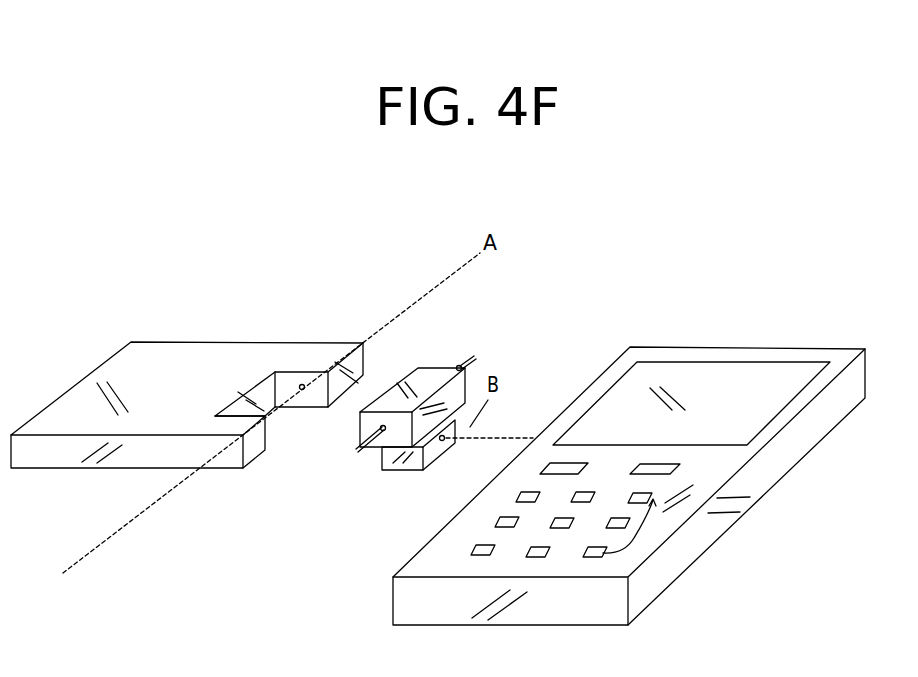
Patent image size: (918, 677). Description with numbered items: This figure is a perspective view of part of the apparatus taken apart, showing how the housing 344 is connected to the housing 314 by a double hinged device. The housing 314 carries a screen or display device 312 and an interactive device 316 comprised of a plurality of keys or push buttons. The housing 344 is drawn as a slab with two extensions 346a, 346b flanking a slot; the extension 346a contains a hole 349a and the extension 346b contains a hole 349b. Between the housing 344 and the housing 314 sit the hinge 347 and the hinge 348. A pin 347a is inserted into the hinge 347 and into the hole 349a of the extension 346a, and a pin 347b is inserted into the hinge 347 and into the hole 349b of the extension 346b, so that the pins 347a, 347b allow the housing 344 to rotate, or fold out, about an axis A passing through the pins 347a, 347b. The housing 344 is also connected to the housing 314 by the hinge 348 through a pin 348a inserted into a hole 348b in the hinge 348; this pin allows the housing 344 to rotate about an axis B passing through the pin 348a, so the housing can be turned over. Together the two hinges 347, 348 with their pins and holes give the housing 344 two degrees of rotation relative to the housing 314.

The screen or display device 312 is at (727, 376).
The housing 314 is at (730, 472).
The interactive device 316 is at (640, 530).
The housing 344 is at (163, 355).
The extension 346a is at (320, 355).
The extension 346b is at (227, 463).
The hinge 347 is at (418, 368).
The pin 347a is at (475, 357).
The pin 347b is at (357, 451).
The hinge 348 is at (413, 466).
The pin 348a is at (515, 440).
The hole 348b is at (444, 441).
The hole 349a is at (302, 385).
The hole 349b is at (269, 428).